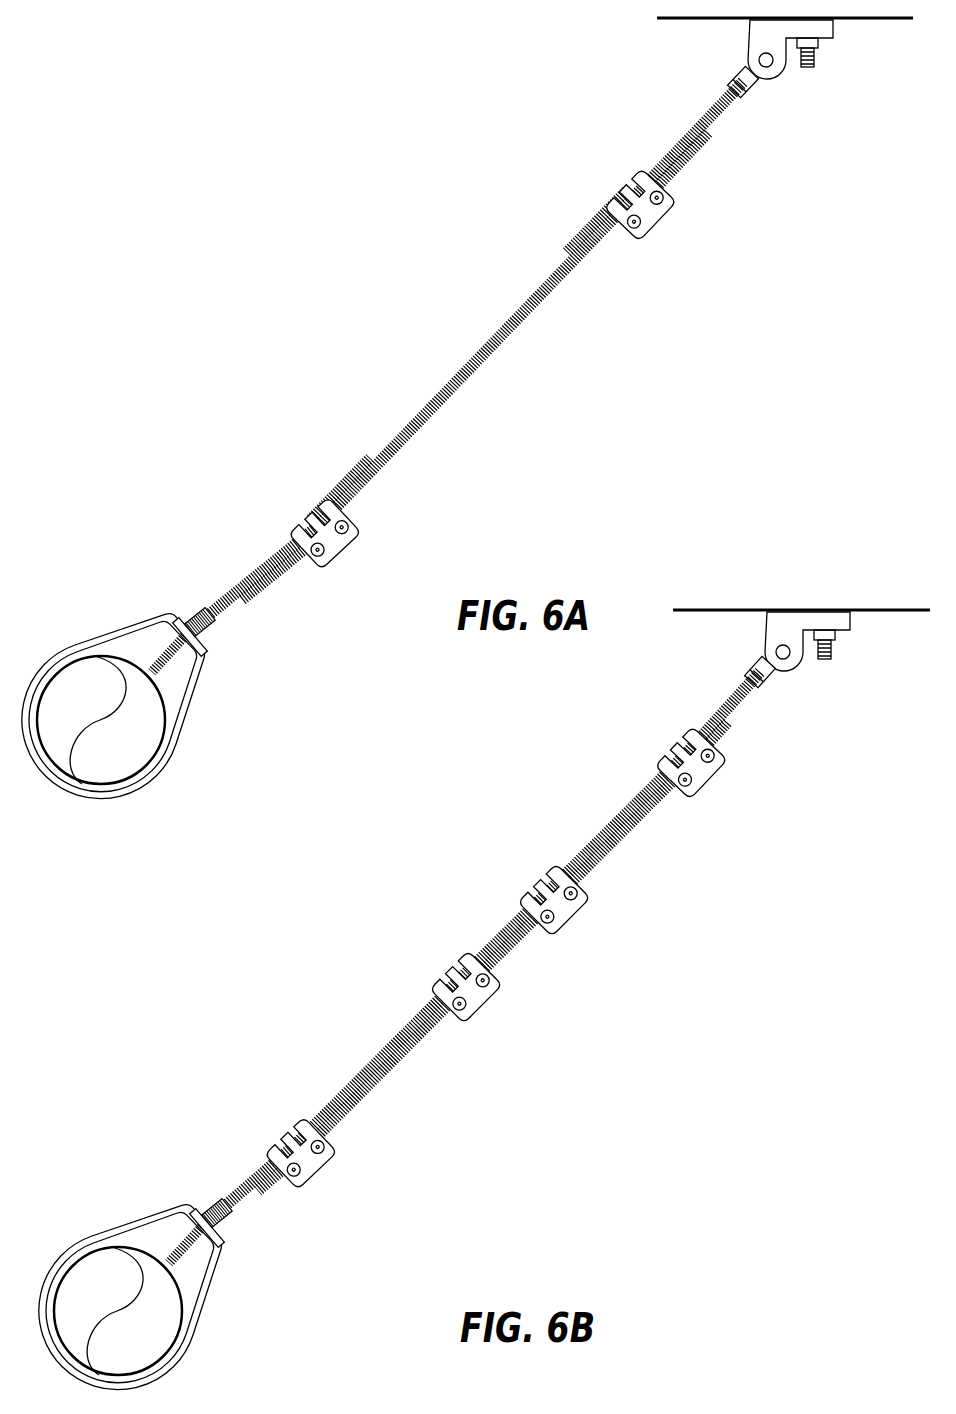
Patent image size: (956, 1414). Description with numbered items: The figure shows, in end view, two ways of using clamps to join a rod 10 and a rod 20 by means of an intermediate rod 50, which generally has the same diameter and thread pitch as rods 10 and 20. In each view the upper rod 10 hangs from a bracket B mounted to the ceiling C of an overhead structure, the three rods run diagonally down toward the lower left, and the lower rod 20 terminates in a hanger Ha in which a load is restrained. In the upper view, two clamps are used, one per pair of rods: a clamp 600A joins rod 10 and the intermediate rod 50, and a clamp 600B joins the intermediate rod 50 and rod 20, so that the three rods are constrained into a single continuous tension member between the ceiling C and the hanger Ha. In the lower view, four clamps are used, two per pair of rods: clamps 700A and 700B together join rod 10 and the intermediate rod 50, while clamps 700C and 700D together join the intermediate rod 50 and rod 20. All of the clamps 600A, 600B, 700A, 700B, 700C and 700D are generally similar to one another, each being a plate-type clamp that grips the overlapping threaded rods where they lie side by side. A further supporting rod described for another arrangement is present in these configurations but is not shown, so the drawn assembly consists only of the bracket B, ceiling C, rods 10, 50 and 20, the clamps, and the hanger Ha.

In FIG. 6A, the rod 10 is at (468, 344).
In FIG. 6B, the rod 10 is at (468, 934).
In FIG. 6A, the rod 20 is at (140, 656).
In FIG. 6B, the rod 20 is at (157, 1257).
In FIG. 6A, the intermediate rod 50 is at (455, 340).
In FIG. 6B, the intermediate rod 50 is at (520, 953).
In FIG. 6A, the clamp 600A is at (600, 180).
In FIG. 6A, the clamp 600B is at (268, 488).
In FIG. 6B, the clamp 700A is at (648, 730).
In FIG. 6B, the clamp 700B is at (512, 868).
In FIG. 6B, the clamp 700C is at (412, 962).
In FIG. 6B, the clamp 700D is at (253, 1110).
In FIG. 6A, the bracket B is at (778, 70).
In FIG. 6B, the bracket B is at (797, 665).
In FIG. 6A, the ceiling C is at (703, 20).
In FIG. 6B, the ceiling C is at (720, 612).
In FIG. 6A, the hanger Ha is at (195, 705).
In FIG. 6B, the hanger Ha is at (212, 1296).